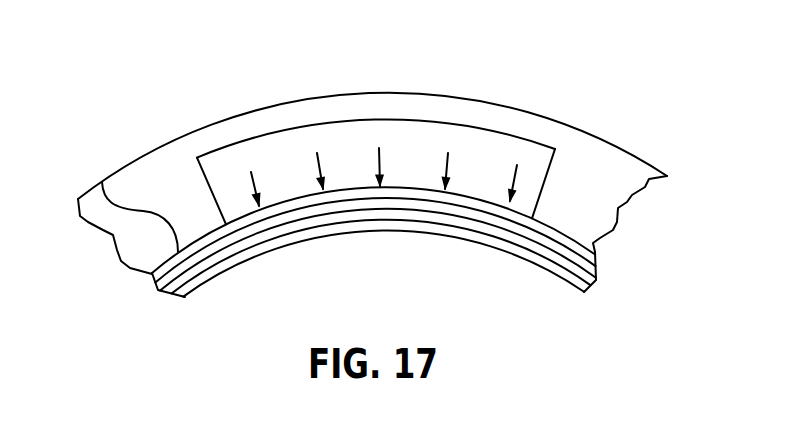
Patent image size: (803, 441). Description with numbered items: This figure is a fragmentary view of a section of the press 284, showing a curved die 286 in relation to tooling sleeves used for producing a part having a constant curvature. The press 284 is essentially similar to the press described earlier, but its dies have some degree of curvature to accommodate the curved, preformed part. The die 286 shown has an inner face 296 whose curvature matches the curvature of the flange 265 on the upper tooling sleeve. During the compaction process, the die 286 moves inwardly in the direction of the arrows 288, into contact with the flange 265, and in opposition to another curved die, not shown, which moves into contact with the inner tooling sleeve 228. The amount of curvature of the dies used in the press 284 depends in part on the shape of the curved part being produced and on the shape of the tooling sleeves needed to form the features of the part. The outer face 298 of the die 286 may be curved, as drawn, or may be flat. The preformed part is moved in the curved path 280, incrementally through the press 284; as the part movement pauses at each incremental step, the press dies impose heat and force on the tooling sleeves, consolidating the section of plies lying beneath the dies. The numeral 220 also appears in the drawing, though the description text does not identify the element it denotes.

The stator core segment 220 is at (580, 256).
The inner tooling sleeve 228 is at (185, 286).
The flange 265 is at (102, 182).
The curved path 280 is at (53, 80).
The press 284 is at (613, 172).
The die 286 is at (423, 148).
The arrows 288 is at (379, 160).
The inner face 296 is at (513, 210).
The outer face 298 is at (497, 128).